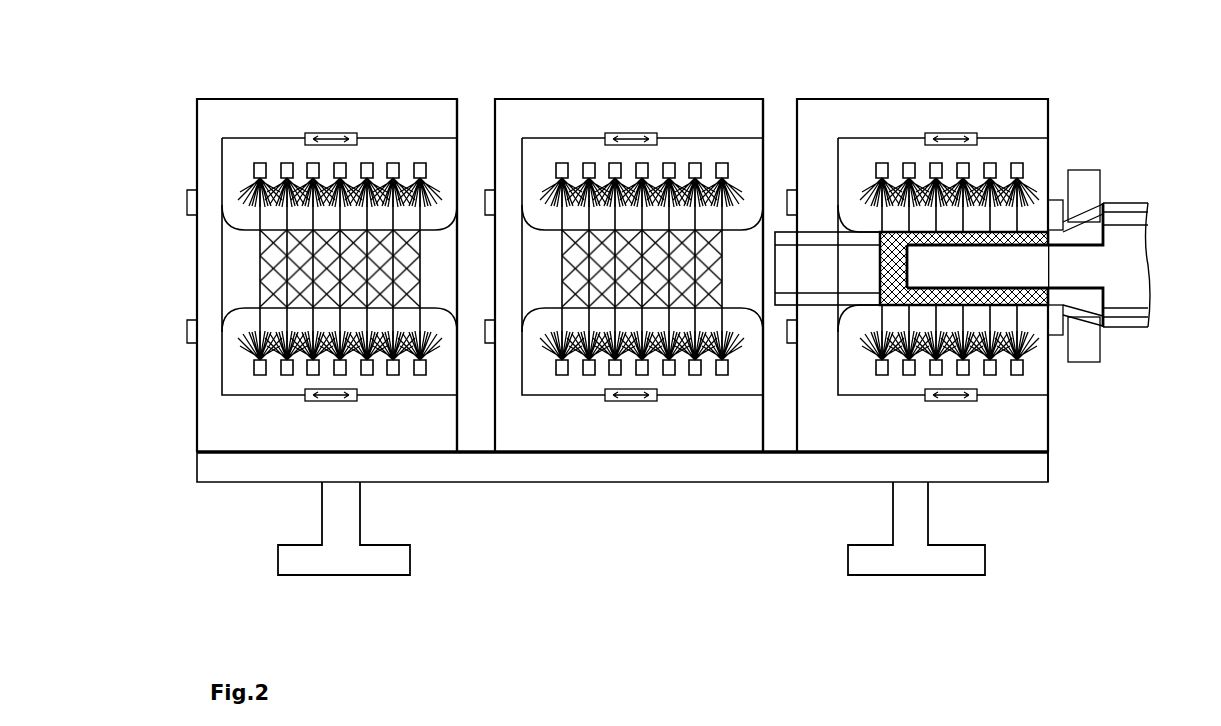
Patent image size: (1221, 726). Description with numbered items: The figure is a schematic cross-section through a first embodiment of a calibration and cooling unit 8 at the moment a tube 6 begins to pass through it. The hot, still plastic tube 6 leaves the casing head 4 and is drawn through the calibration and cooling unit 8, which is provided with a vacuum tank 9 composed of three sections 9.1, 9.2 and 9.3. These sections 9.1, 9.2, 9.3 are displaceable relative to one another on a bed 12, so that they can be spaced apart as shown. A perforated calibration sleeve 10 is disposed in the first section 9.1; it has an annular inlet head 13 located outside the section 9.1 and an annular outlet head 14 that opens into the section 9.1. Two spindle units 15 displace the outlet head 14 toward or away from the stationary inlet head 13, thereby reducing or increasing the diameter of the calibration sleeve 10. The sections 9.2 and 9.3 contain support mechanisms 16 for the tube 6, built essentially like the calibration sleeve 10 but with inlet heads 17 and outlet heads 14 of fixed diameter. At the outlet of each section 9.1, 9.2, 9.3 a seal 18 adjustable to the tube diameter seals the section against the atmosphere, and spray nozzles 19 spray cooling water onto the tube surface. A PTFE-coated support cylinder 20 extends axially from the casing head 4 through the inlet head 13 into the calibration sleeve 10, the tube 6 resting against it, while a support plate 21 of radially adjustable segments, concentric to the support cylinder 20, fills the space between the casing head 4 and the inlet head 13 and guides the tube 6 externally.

The casing head 4 is at (1135, 245).
The tube 6 is at (820, 232).
The calibration and cooling unit 8 is at (1113, 90).
The vacuum tank 9 is at (1052, 438).
The first section 9.1 is at (898, 98).
The second section 9.2 is at (680, 98).
The third section 9.3 is at (275, 98).
The calibration sleeve 10 is at (1056, 337).
The bed 12 is at (708, 472).
The inlet head 13 is at (1055, 200).
The outlet head 14 is at (230, 306).
The spindle unit 15 is at (390, 138).
The support mechanism 16 is at (388, 380).
The inlet head 17 is at (462, 228).
The seal 18 is at (192, 345).
The spray nozzle 19 is at (373, 163).
The support cylinder 20 is at (1102, 323).
The support plate 21 is at (1101, 176).